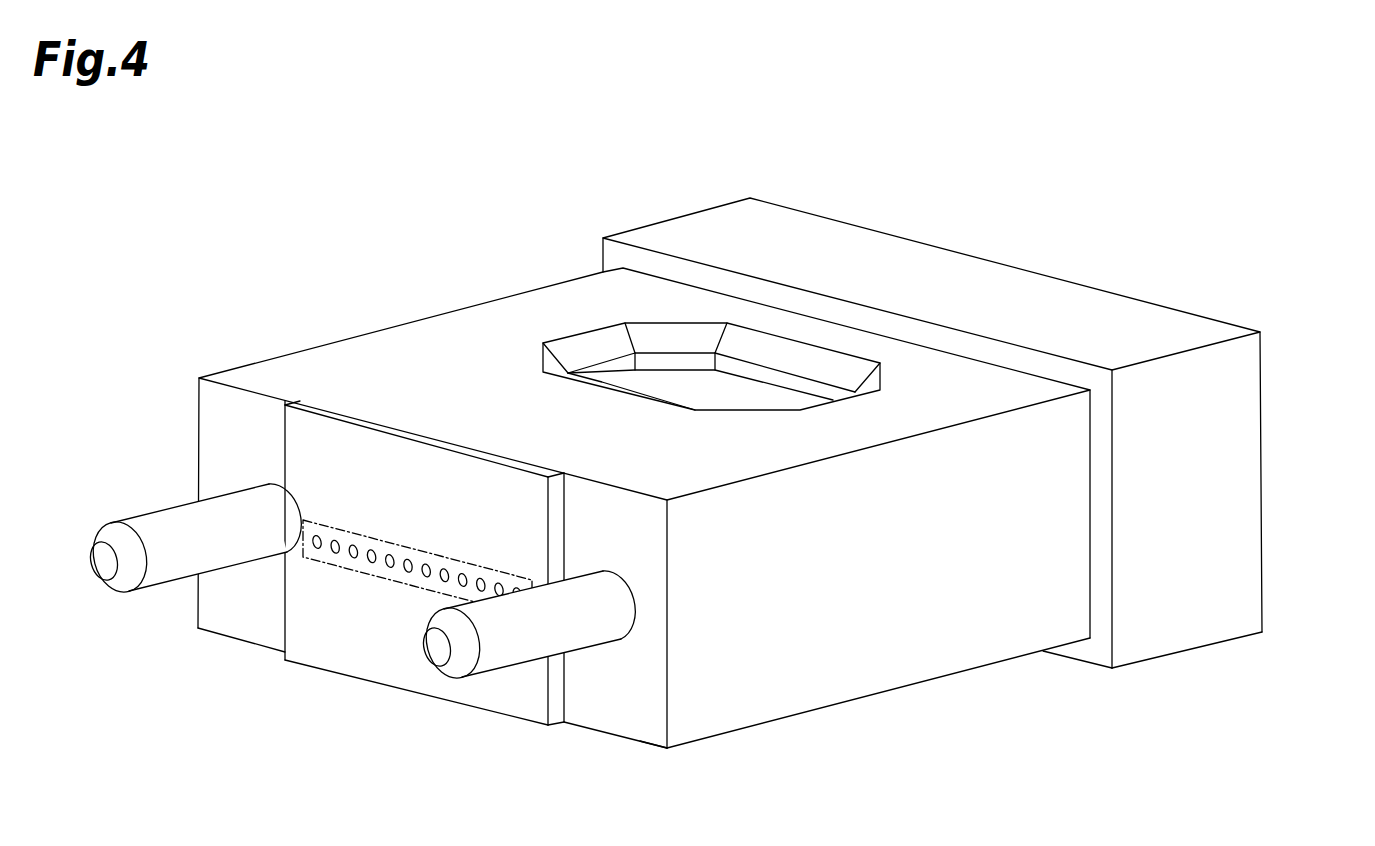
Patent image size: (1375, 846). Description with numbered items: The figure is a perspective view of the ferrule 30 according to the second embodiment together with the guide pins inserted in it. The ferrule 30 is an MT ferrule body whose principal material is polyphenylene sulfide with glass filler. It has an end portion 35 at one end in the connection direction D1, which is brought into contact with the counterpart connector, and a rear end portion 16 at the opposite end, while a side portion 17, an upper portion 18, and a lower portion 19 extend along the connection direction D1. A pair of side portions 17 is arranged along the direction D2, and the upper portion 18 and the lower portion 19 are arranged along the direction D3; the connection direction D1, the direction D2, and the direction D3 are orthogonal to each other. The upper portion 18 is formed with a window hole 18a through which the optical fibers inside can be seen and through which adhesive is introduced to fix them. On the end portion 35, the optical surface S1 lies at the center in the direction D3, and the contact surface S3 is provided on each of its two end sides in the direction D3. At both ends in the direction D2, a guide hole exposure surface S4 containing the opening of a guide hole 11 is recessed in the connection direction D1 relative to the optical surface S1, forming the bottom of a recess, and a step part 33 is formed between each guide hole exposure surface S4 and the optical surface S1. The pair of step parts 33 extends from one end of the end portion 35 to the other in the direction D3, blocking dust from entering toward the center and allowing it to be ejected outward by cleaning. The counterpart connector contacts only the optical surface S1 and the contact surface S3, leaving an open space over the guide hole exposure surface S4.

The ferrule 30 is at (536, 168).
The upper portion 18 is at (473, 320).
The window hole 18a is at (750, 372).
The rear end portion 16 is at (1262, 395).
The side portion 17 is at (980, 635).
The lower portion 19 is at (750, 727).
The step part 33 is at (288, 402).
The end portion 35 is at (299, 692).
The guide hole 11 is at (277, 495).
The pin tip P is at (100, 570).
The optical surface S1 is at (387, 582).
The contact surface S3 is at (347, 447).
The guide hole exposure surface S4 is at (237, 578).
The connection direction D1 is at (930, 732).
The direction D2 is at (1167, 258).
The direction D3 is at (1313, 460).